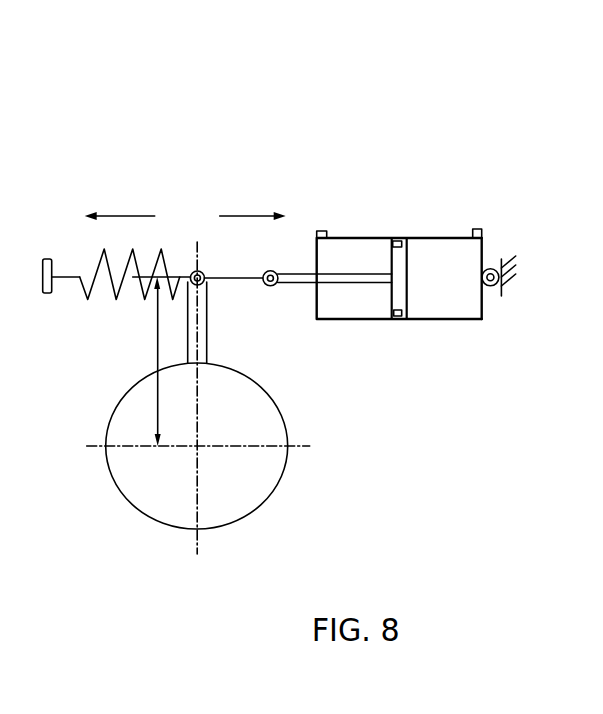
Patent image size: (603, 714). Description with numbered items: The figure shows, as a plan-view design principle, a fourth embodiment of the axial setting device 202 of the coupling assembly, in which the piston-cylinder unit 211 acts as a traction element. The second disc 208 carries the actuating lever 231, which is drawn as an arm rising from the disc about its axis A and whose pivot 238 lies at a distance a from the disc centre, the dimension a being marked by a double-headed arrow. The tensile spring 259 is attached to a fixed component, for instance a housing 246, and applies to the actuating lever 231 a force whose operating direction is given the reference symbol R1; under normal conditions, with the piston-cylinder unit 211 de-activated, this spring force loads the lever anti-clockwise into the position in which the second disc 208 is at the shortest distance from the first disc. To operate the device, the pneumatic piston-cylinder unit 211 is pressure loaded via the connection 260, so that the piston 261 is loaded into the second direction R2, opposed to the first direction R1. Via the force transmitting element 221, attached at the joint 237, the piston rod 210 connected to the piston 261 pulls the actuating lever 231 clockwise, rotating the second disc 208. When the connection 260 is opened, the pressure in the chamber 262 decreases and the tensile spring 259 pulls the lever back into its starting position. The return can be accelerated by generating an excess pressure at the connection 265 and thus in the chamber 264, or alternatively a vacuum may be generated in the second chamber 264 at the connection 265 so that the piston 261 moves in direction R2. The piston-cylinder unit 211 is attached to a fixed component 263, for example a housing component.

The axial setting device 202 is at (200, 124).
The second disc 208 is at (280, 423).
The piston rod 210 is at (354, 284).
The piston-cylinder unit 211 is at (367, 238).
The force transmitting element 221 is at (233, 277).
The actuating lever 231 is at (205, 335).
The pivot joint 237 is at (275, 271).
The piston 238 is at (193, 273).
The housing 246 is at (45, 260).
The tensile spring 259 is at (115, 301).
The connection 260 is at (320, 232).
The piston 261 is at (403, 302).
The chamber 262 is at (378, 257).
The fixed component 263 is at (513, 278).
The second chamber 264 is at (445, 257).
The connection 265 is at (481, 232).
The distance a is at (156, 361).
The axis A is at (200, 447).
The first direction R1 is at (120, 198).
The second direction R2 is at (253, 198).